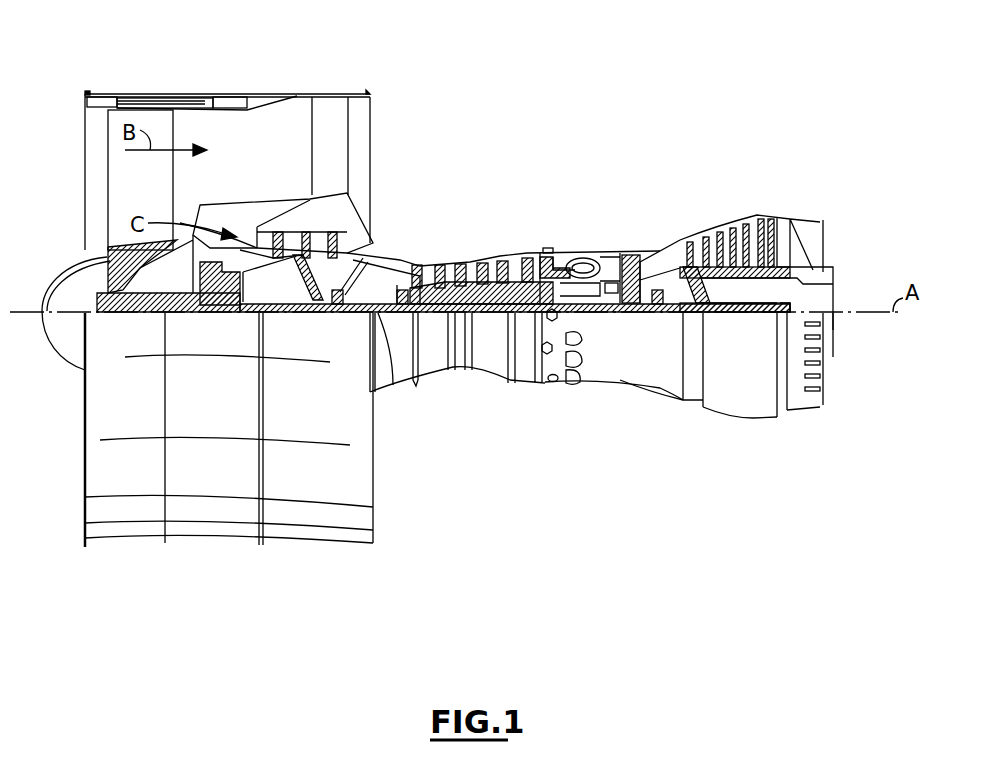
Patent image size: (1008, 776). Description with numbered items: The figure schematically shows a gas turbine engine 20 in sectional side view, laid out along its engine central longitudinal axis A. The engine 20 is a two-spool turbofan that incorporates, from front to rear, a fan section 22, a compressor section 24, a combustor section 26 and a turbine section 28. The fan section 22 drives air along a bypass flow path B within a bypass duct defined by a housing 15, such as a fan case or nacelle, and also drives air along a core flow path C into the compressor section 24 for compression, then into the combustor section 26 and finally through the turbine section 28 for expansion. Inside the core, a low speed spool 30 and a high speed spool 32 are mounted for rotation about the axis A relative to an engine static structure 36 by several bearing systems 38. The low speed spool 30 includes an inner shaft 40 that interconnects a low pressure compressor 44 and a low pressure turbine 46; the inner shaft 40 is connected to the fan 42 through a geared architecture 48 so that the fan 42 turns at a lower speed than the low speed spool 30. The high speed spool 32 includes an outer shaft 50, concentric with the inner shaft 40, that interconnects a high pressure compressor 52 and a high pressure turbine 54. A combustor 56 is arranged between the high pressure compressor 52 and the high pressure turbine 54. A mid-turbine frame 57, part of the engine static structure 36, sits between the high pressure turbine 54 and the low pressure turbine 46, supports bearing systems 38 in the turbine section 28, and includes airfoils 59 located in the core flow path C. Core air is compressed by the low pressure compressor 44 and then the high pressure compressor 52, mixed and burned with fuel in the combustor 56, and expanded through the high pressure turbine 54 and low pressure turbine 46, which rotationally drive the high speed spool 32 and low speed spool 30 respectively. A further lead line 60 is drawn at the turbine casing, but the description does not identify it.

The housing 15 is at (232, 96).
The gas turbine engine 20 is at (589, 130).
The fan section 22 is at (171, 88).
The compressor section 24 is at (404, 244).
The combustor section 26 is at (582, 234).
The turbine section 28 is at (709, 195).
The low speed spool 30 is at (492, 316).
The high speed spool 32 is at (528, 262).
The engine static structure 36 is at (525, 384).
The bearing systems 38 is at (336, 313).
The inner shaft 40 is at (393, 385).
The fan 42 is at (156, 194).
The low pressure compressor 44 is at (362, 192).
The low pressure turbine 46 is at (736, 228).
The geared architecture 48 is at (230, 313).
The outer shaft 50 is at (593, 313).
The high pressure compressor 52 is at (475, 262).
The high pressure turbine 54 is at (640, 262).
The combustor 56 is at (590, 262).
The mid-turbine frame 57 is at (668, 248).
The airfoils 59 is at (690, 280).
The outer diameter of turbine 60 is at (700, 245).